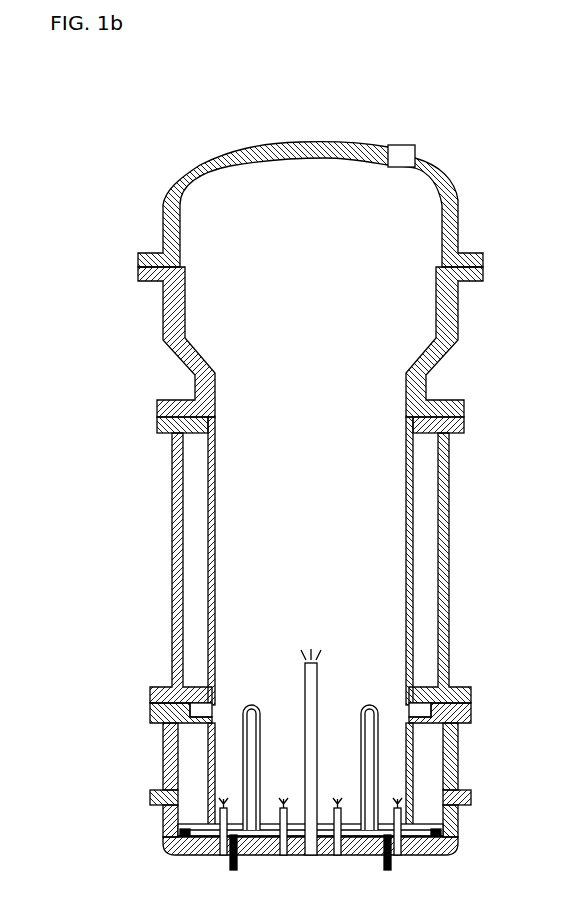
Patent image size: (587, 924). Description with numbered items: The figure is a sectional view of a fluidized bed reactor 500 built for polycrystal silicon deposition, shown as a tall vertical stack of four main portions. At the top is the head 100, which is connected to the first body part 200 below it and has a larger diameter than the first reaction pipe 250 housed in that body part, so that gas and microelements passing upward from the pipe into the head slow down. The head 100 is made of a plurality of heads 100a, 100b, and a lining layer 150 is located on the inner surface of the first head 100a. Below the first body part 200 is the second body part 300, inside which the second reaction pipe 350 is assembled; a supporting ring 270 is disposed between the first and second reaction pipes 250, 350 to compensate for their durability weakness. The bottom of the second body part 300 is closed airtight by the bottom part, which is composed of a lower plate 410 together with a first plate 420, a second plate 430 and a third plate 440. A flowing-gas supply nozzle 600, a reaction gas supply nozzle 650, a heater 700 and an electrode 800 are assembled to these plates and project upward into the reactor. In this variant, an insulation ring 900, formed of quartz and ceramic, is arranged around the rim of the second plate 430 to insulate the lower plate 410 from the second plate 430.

The fluidized bed reactor 500 is at (122, 92).
The head 100 is at (80, 222).
The first head 100a is at (160, 318).
The head 100b is at (160, 217).
The lining layer 150 is at (468, 302).
The first body part 200 is at (177, 582).
The first reaction pipe 250 is at (210, 515).
The supporting ring 270 is at (202, 705).
The second body part 300 is at (165, 742).
The second reaction pipe 350 is at (205, 795).
The lower plate 410 is at (423, 852).
The first plate 420 is at (456, 848).
The second plate 430 is at (198, 832).
The third plate 440 is at (440, 823).
The flowing-gas supply nozzle 600 is at (398, 856).
The reaction gas supply nozzle 650 is at (318, 673).
The heater 700 is at (372, 747).
The electrode 800 is at (235, 872).
The insulation ring 900 is at (442, 830).